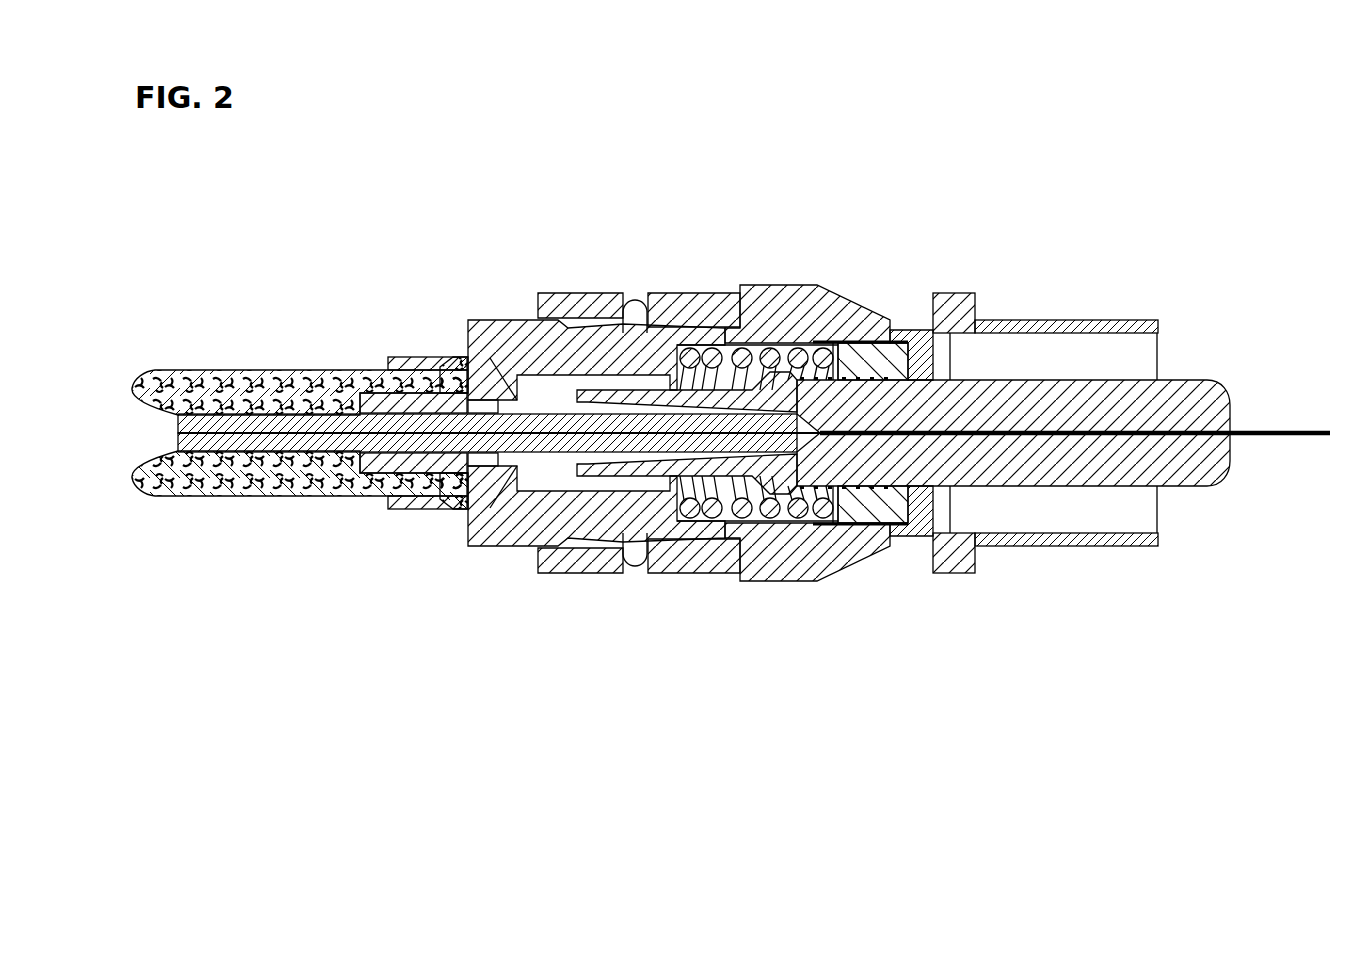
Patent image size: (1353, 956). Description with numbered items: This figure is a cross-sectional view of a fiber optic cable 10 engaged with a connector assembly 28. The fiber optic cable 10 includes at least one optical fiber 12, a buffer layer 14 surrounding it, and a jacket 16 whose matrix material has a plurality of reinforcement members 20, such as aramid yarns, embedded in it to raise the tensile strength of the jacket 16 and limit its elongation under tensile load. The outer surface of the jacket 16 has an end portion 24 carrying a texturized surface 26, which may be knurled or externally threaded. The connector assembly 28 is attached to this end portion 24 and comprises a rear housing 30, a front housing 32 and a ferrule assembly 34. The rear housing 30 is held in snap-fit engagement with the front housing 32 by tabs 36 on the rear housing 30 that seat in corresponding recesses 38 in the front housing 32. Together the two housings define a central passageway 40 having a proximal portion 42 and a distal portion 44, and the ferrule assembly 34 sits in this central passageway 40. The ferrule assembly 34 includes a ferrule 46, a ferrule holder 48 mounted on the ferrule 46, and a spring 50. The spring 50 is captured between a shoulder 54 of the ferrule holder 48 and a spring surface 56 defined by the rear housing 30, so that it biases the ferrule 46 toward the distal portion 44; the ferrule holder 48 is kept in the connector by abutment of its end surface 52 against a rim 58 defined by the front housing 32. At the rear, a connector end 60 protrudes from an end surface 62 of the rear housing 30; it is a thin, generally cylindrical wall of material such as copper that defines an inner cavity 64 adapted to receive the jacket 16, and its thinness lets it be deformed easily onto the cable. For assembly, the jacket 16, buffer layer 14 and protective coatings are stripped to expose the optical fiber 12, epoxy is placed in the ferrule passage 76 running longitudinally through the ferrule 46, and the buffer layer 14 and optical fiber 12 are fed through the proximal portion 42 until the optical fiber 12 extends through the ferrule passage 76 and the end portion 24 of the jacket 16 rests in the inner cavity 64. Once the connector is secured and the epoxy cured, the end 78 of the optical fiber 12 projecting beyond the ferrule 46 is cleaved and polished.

The fiber optic cable 10 is at (131, 363).
The optical fiber 12 is at (188, 436).
The buffer layer 14 is at (533, 443).
The jacket 16 is at (338, 362).
The reinforcement members 20 is at (257, 370).
The end portion 24 is at (454, 504).
The texturized surface 26 is at (423, 510).
The connector assembly 28 is at (954, 174).
The rear housing 30 is at (517, 320).
The front housing 32 is at (784, 288).
The ferrule assembly 34 is at (987, 372).
The tabs 36 is at (631, 300).
The recesses 38 is at (623, 568).
The central passageway 40 is at (554, 490).
The proximal portion 42 is at (490, 405).
The distal portion 44 is at (1150, 348).
The ferrule 46 is at (1185, 488).
The ferrule holder 48 is at (641, 388).
The spring 50 is at (733, 520).
The end surface 52 is at (917, 503).
The shoulder 54 is at (838, 341).
The spring surface 56 is at (683, 522).
The rim 58 is at (907, 357).
The connector end 60 is at (401, 357).
The end surface 62 is at (468, 333).
The inner cavity 64 is at (375, 490).
The ferrule passage 76 is at (1205, 420).
The end 78 is at (1290, 433).